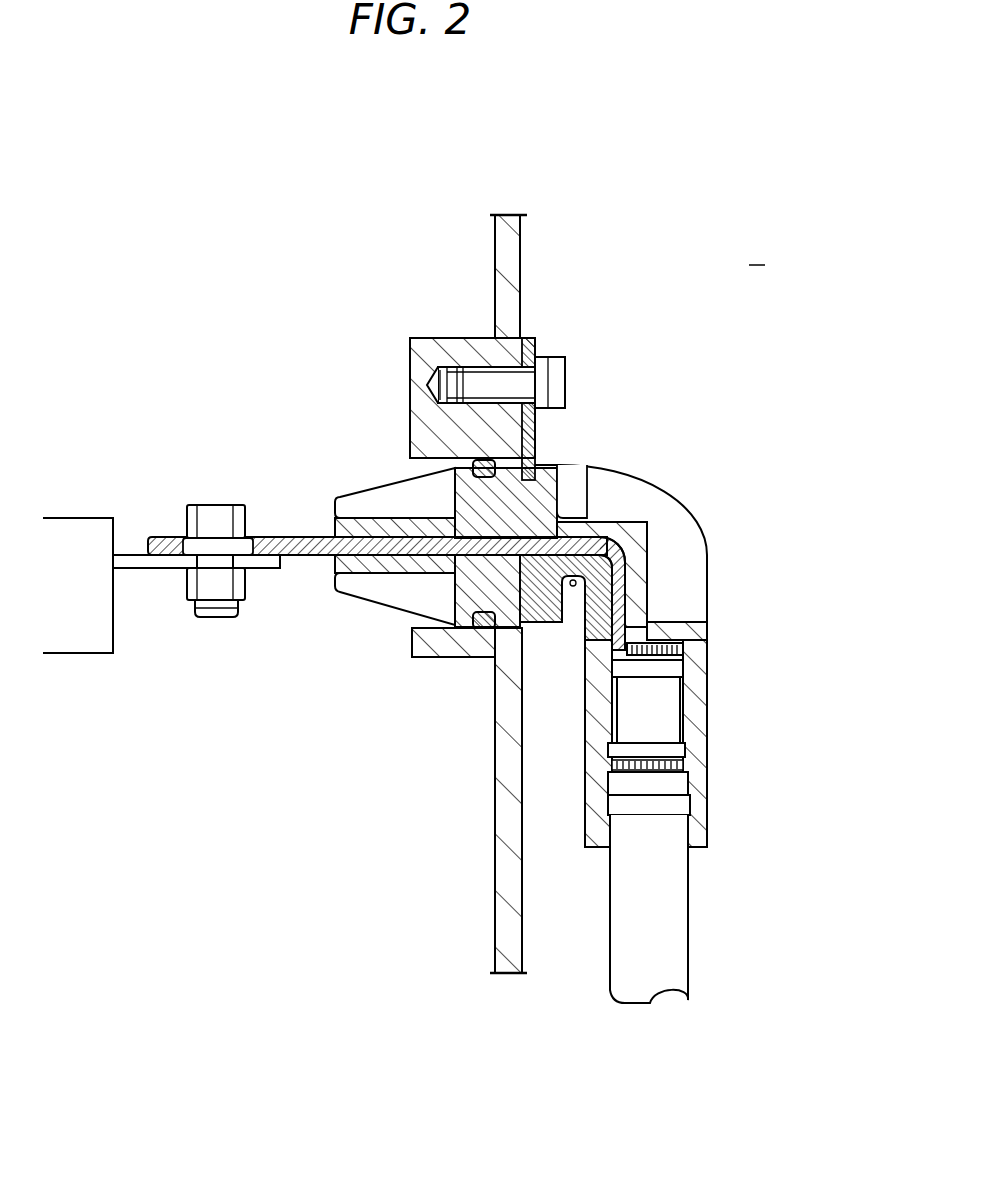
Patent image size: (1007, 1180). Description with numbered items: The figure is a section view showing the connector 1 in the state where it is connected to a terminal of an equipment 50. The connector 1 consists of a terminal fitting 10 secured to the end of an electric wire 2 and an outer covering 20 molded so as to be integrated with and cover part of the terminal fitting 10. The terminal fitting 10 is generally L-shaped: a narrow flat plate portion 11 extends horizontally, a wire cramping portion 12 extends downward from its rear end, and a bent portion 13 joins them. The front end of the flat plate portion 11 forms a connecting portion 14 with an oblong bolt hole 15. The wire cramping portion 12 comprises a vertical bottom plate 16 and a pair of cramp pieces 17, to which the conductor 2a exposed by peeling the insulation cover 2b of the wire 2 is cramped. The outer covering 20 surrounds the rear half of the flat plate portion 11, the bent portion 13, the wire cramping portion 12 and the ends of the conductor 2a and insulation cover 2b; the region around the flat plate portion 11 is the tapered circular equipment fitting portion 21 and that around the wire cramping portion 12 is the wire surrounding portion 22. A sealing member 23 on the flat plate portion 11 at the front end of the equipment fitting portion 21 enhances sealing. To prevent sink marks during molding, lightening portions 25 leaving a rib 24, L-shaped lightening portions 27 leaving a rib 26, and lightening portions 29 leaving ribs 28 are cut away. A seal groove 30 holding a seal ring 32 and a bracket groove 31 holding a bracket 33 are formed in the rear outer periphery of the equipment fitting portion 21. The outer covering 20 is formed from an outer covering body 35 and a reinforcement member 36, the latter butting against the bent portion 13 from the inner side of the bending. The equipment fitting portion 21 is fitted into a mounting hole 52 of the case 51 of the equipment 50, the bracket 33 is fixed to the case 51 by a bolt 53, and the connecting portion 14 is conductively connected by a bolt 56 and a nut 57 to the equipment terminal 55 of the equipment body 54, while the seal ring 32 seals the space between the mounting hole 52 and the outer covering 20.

The connector 1 is at (757, 253).
The electric wire 2 is at (661, 823).
The conductor 2a is at (700, 648).
The insulation cover 2b is at (680, 940).
The terminal fitting 10 is at (447, 542).
The flat plate portion 11 is at (297, 553).
The wire cramping portion 12 is at (683, 700).
The bent portion 13 is at (628, 533).
The connecting portion 14 is at (157, 540).
The bolt hole 15 is at (250, 545).
The bottom plate 16 is at (608, 726).
The cramp pieces 17 is at (668, 732).
The outer covering 20 is at (646, 605).
The equipment fitting portion 21 is at (342, 497).
The wire surrounding portion 22 is at (690, 810).
The sealing member 23 is at (403, 603).
The rib 24 is at (575, 605).
The lightening portions 25 is at (583, 517).
The rib 26 is at (677, 562).
The lightening portions 27 is at (560, 498).
The ribs 28 is at (397, 490).
The lightening portions 29 is at (437, 502).
The seal groove 30 is at (430, 452).
The bracket groove 31 is at (530, 615).
The seal ring 32 is at (486, 630).
The bracket 33 is at (530, 345).
The outer covering body 35 is at (660, 475).
The reinforcement member 36 is at (590, 640).
The equipment 50 is at (524, 552).
The case 51 is at (510, 243).
The mounting hole 52 is at (450, 640).
The bolt 53 is at (548, 382).
The equipment body 54 is at (75, 520).
The equipment terminal 55 is at (145, 565).
The bolt 56 is at (214, 510).
The nut 57 is at (215, 607).